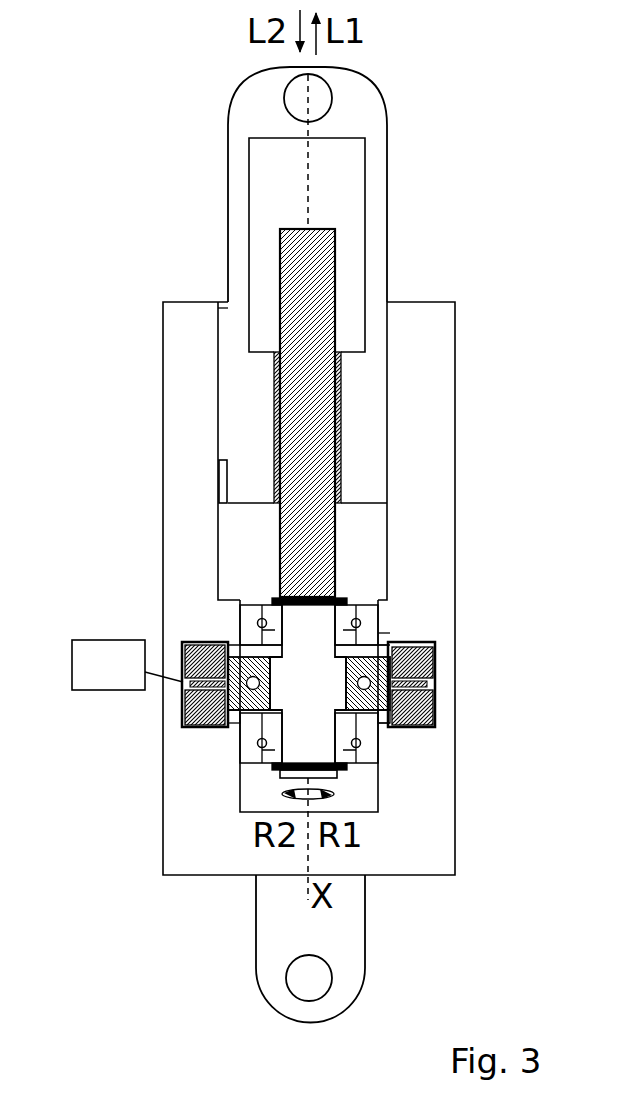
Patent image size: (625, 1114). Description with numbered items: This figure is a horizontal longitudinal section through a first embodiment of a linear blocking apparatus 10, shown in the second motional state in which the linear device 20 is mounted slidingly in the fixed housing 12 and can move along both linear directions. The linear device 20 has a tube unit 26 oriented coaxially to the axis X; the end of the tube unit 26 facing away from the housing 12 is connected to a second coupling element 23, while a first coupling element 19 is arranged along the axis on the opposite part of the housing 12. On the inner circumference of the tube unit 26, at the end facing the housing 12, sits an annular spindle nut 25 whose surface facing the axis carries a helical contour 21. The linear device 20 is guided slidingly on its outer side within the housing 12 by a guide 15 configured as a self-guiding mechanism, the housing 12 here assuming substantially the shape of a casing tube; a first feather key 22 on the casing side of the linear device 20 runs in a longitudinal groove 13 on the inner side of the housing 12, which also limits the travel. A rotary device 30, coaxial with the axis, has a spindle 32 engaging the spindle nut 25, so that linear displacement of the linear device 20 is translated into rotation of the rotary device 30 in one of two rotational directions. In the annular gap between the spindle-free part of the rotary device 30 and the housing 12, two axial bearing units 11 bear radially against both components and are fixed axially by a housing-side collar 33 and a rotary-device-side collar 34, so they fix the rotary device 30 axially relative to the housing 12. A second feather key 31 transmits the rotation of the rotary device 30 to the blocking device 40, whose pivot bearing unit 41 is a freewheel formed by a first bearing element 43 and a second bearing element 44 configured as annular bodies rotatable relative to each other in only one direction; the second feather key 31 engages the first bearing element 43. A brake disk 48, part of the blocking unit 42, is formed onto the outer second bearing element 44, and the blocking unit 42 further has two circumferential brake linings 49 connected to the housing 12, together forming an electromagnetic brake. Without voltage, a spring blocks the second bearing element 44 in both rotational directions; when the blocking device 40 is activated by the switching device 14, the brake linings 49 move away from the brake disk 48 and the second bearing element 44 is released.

The actuator 10 is at (454, 213).
The axial bearing unit 11 is at (372, 623).
The housing 12 is at (427, 333).
The groove 13 is at (223, 328).
The switching device 14 is at (92, 658).
The guide 15 is at (387, 323).
The first coupling element 19 is at (340, 970).
The linear device 20 is at (407, 113).
The helical contour 21 is at (340, 492).
The first feather key 22 is at (218, 453).
The second coupling element 23 is at (284, 93).
The spindle nut 25 is at (367, 435).
The tube unit 26 is at (240, 211).
The rotary device 30 is at (356, 563).
The second feather key 31 is at (247, 632).
The spindle 32 is at (336, 250).
The housing-side collar 33 is at (240, 717).
The rotary-device-side collar 34 is at (270, 597).
The blocking device 40 is at (481, 685).
The pivot bearing unit 41 is at (383, 727).
The blocking unit 42 is at (426, 737).
The first bearing element 43 is at (380, 635).
The second bearing element 44 is at (383, 645).
The brake disk 48 is at (185, 685).
The brake lining 49 is at (433, 668).